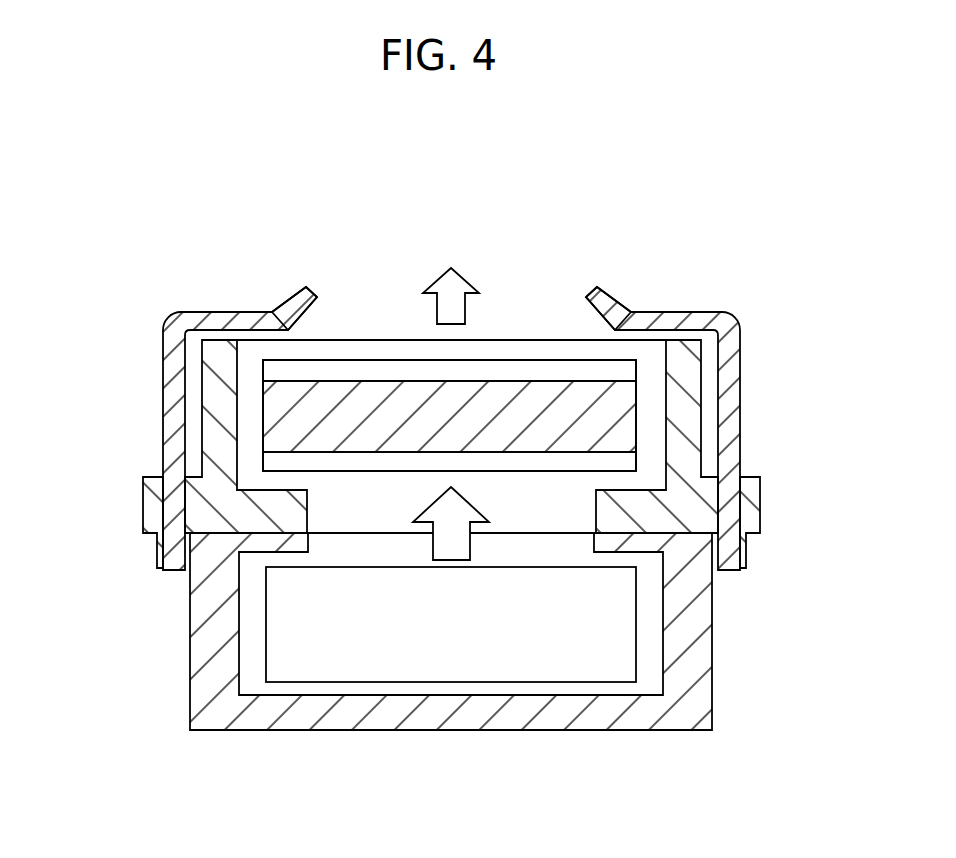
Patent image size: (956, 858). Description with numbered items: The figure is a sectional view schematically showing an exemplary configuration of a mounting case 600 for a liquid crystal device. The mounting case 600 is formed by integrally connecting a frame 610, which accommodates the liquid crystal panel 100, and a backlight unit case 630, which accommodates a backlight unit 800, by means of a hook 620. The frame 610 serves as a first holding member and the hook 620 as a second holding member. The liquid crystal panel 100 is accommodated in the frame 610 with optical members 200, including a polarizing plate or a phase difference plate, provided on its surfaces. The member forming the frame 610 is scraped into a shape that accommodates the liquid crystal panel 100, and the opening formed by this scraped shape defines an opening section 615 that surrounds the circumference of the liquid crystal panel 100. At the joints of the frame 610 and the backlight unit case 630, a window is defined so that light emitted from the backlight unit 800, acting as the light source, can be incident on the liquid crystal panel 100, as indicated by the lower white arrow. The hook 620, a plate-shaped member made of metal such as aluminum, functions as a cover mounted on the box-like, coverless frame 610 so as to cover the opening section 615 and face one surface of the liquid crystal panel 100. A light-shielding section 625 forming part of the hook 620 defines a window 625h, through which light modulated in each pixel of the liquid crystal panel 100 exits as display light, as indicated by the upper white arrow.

The mounting case 600 is at (158, 229).
The hook 620 is at (172, 334).
The light-shielding section 625 is at (293, 307).
The window 625h is at (531, 268).
The opening section 615 is at (238, 416).
The liquid crystal panel 100 is at (629, 403).
The optical members 200 is at (273, 365).
The frame 610 is at (152, 500).
The backlight unit case 630 is at (372, 725).
The backlight unit 800 is at (505, 668).